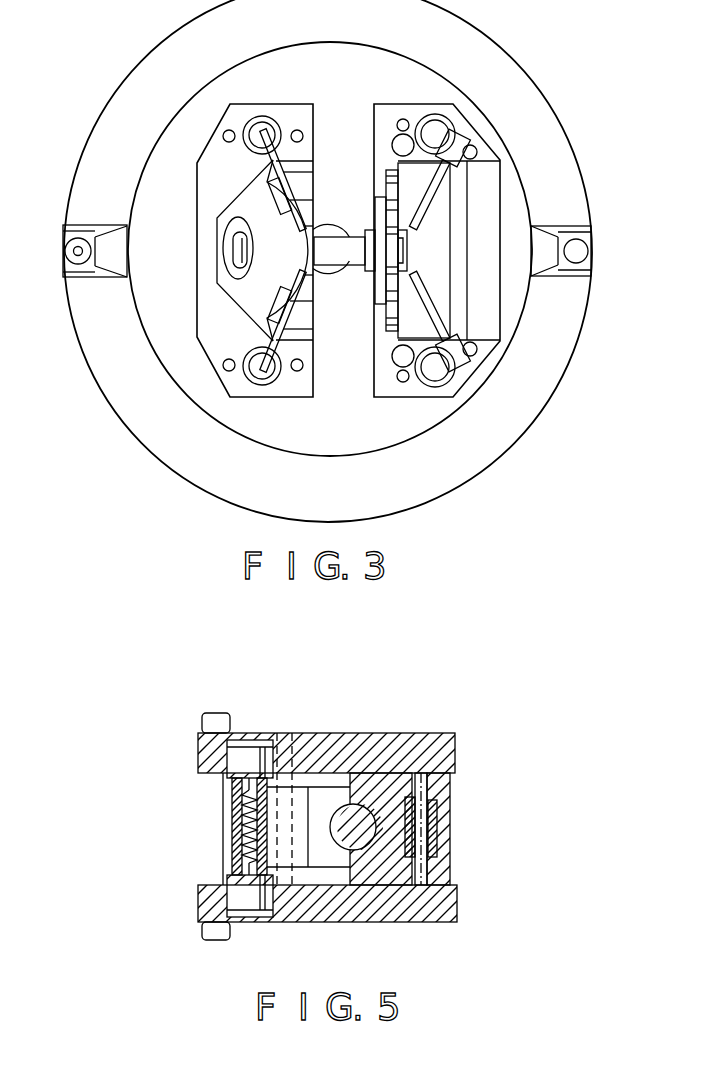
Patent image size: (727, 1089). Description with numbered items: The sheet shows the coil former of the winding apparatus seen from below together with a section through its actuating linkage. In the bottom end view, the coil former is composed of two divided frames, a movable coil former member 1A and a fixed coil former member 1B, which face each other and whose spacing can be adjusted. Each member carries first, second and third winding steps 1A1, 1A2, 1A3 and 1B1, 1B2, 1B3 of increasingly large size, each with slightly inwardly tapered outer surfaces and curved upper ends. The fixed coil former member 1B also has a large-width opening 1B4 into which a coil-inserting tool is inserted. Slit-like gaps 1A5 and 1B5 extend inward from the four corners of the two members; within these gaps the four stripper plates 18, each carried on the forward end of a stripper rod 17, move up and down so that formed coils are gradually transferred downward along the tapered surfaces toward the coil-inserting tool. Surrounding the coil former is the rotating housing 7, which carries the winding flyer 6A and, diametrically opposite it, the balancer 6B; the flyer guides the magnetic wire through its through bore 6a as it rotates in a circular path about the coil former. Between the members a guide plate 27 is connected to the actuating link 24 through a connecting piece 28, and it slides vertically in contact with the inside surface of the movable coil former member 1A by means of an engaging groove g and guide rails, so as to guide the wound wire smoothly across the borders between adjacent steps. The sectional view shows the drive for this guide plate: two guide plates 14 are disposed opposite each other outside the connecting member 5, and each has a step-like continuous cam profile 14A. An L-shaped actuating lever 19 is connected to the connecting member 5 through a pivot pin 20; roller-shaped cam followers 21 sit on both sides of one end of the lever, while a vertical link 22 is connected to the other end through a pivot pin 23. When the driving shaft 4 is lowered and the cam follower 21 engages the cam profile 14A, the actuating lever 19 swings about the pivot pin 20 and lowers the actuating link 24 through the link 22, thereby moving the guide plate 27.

In FIG. 3, the rotating housing 7 is at (482, 42).
In FIG. 3, the movable coil former member 1A is at (476, 122).
In FIG. 3, the fixed coil former member 1B is at (210, 126).
In FIG. 3, the first winding step 1A1 is at (427, 250).
In FIG. 3, the second winding step 1A2 is at (435, 262).
In FIG. 3, the third winding step 1A3 is at (372, 290).
In FIG. 3, the slit-like gap 1A5 is at (438, 188).
In FIG. 3, the first winding step 1B1 is at (242, 242).
In FIG. 3, the second winding step 1B2 is at (233, 253).
In FIG. 3, the third winding step 1B3 is at (223, 267).
In FIG. 3, the large-width opening 1B4 is at (244, 203).
In FIG. 3, the slit-like gap 1B5 is at (278, 307).
In FIG. 3, the stripper rod 17 is at (256, 128).
In FIG. 3, the stripper plate 18 is at (279, 168).
In FIG. 3, the actuating link 24 is at (327, 276).
In FIG. 3, the guide plate 27 is at (387, 180).
In FIG. 3, the connecting piece 28 is at (358, 240).
In FIG. 3, the engaging groove g is at (400, 262).
In FIG. 3, the winding flyer 6A is at (63, 244).
In FIG. 3, the through bore 6a is at (75, 252).
In FIG. 3, the balancer 6B is at (585, 243).
In FIG. 5, the driving shaft 4 is at (350, 803).
In FIG. 5, the connecting member 5 is at (332, 862).
In FIG. 5, the guide plate 14 is at (418, 745).
In FIG. 5, the step-like continuous cam profile 14A is at (250, 733).
In FIG. 5, the actuating lever 19 is at (437, 863).
In FIG. 5, the pivot pin 20 is at (340, 800).
In FIG. 5, the cam follower 21 is at (235, 760).
In FIG. 5, the vertical link 22 is at (432, 823).
In FIG. 5, the pivot pin 23 is at (422, 787).